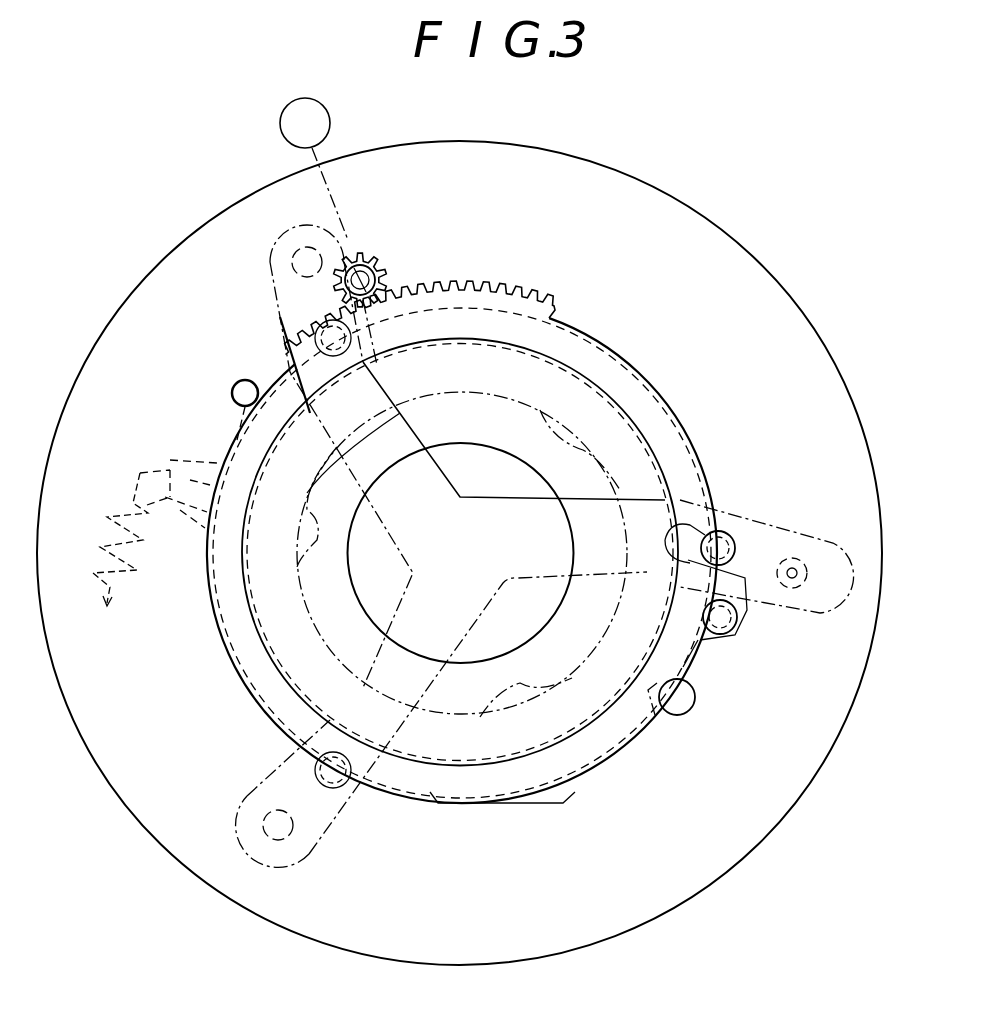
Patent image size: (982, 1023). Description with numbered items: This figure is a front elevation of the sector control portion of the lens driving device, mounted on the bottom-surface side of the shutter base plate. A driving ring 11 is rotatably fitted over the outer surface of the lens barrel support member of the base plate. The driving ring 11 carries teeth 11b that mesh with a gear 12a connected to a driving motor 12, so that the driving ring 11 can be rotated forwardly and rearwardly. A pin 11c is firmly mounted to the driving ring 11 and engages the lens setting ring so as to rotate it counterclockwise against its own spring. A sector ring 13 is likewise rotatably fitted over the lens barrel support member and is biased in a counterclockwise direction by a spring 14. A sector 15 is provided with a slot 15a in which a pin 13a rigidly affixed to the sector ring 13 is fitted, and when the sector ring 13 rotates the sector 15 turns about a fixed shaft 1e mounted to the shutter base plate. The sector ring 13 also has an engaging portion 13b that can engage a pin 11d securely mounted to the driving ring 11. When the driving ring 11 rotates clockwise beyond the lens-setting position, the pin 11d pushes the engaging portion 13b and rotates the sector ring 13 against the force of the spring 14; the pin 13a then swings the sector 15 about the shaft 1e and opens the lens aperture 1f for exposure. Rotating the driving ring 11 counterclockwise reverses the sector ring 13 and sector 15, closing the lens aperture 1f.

The fixed shaft 1e is at (800, 580).
The lens aperture 1f is at (530, 617).
The driving ring 11 is at (283, 343).
The teeth 11b is at (270, 258).
The pin 11c is at (237, 397).
The pin 11d is at (730, 632).
The driving motor 12 is at (330, 118).
The gear 12a is at (380, 260).
The sector ring 13 is at (190, 463).
The pin 13a is at (725, 547).
The engaging portion 13b is at (677, 705).
The spring 14 is at (140, 473).
The sector 15 is at (787, 607).
The slot 15a is at (740, 553).